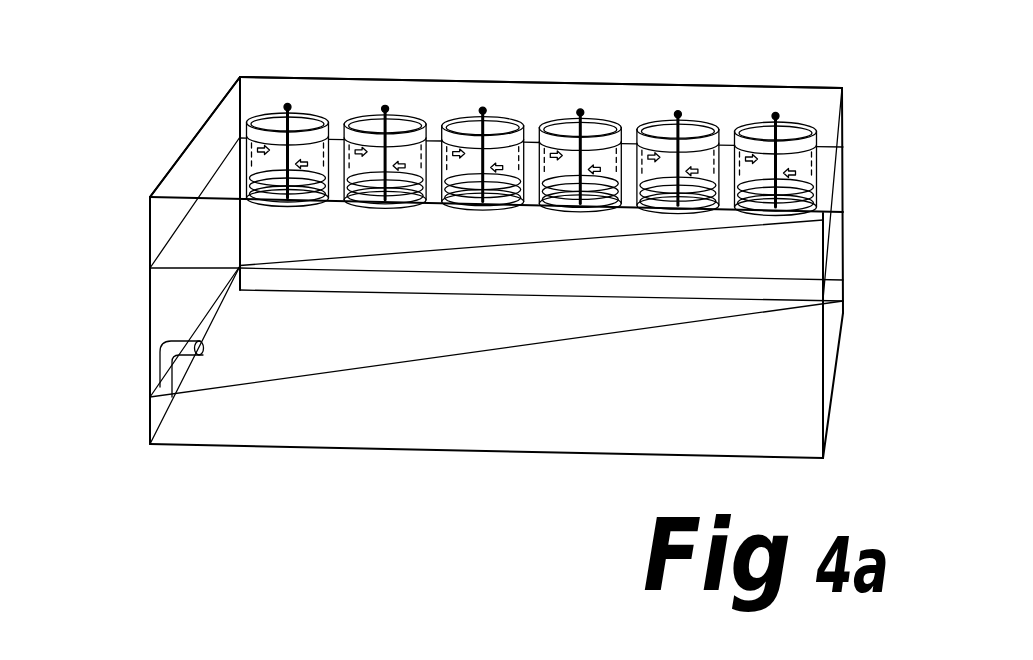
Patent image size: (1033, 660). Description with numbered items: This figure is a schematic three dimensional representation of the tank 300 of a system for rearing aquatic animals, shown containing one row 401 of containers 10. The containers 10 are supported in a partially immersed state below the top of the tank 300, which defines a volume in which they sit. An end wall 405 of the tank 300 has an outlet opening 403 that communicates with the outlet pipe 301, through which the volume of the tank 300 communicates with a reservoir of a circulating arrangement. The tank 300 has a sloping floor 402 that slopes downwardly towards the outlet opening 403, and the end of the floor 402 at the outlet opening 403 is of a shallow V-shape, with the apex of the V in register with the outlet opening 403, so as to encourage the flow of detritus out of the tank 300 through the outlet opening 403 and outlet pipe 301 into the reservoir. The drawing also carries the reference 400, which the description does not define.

The container 10 is at (463, 108).
The tank 300 is at (662, 86).
The outlet pipe 301 is at (150, 388).
The housing 400 is at (893, 100).
The row 401 is at (233, 122).
The sloping floor 402 is at (248, 387).
The outlet opening 403 is at (207, 343).
The end wall 405 is at (205, 186).